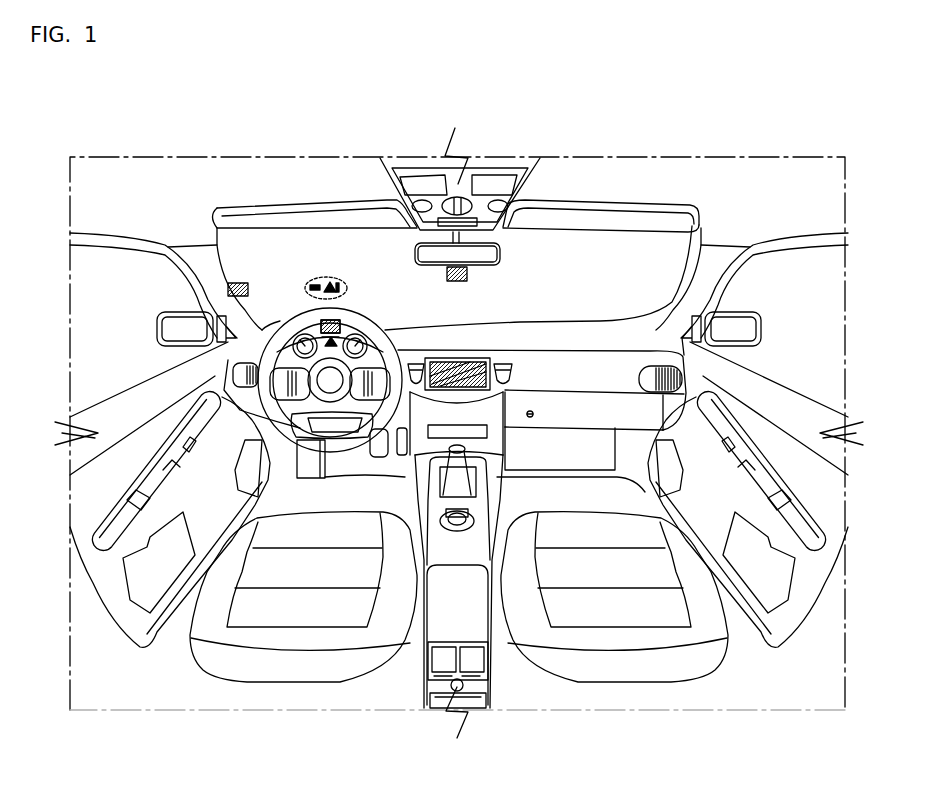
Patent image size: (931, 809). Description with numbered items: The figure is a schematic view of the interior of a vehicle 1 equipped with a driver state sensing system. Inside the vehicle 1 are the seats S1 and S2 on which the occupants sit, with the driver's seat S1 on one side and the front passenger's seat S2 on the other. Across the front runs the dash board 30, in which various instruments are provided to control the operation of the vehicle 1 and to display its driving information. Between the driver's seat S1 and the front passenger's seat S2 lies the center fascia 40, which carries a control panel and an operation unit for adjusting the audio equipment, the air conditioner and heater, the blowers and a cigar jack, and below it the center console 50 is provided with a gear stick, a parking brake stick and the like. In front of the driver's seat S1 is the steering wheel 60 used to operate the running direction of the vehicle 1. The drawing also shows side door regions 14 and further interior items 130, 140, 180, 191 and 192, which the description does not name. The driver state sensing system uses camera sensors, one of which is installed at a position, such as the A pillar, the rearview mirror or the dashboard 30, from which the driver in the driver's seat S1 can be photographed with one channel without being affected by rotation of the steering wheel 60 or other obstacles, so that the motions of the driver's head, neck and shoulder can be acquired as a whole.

The vehicle 1 is at (114, 121).
The door 14 is at (155, 393).
The dash board 30 is at (592, 370).
The center fascia 40 is at (498, 416).
The center console 50 is at (462, 541).
The steering wheel 60 is at (291, 323).
The input device 130 is at (373, 446).
The display 140 is at (462, 355).
The input device 180 is at (397, 456).
The cluster display 191 is at (345, 333).
The indicator 192 is at (327, 276).
The driver's seat S1 is at (282, 668).
The front passenger's seat S2 is at (617, 666).